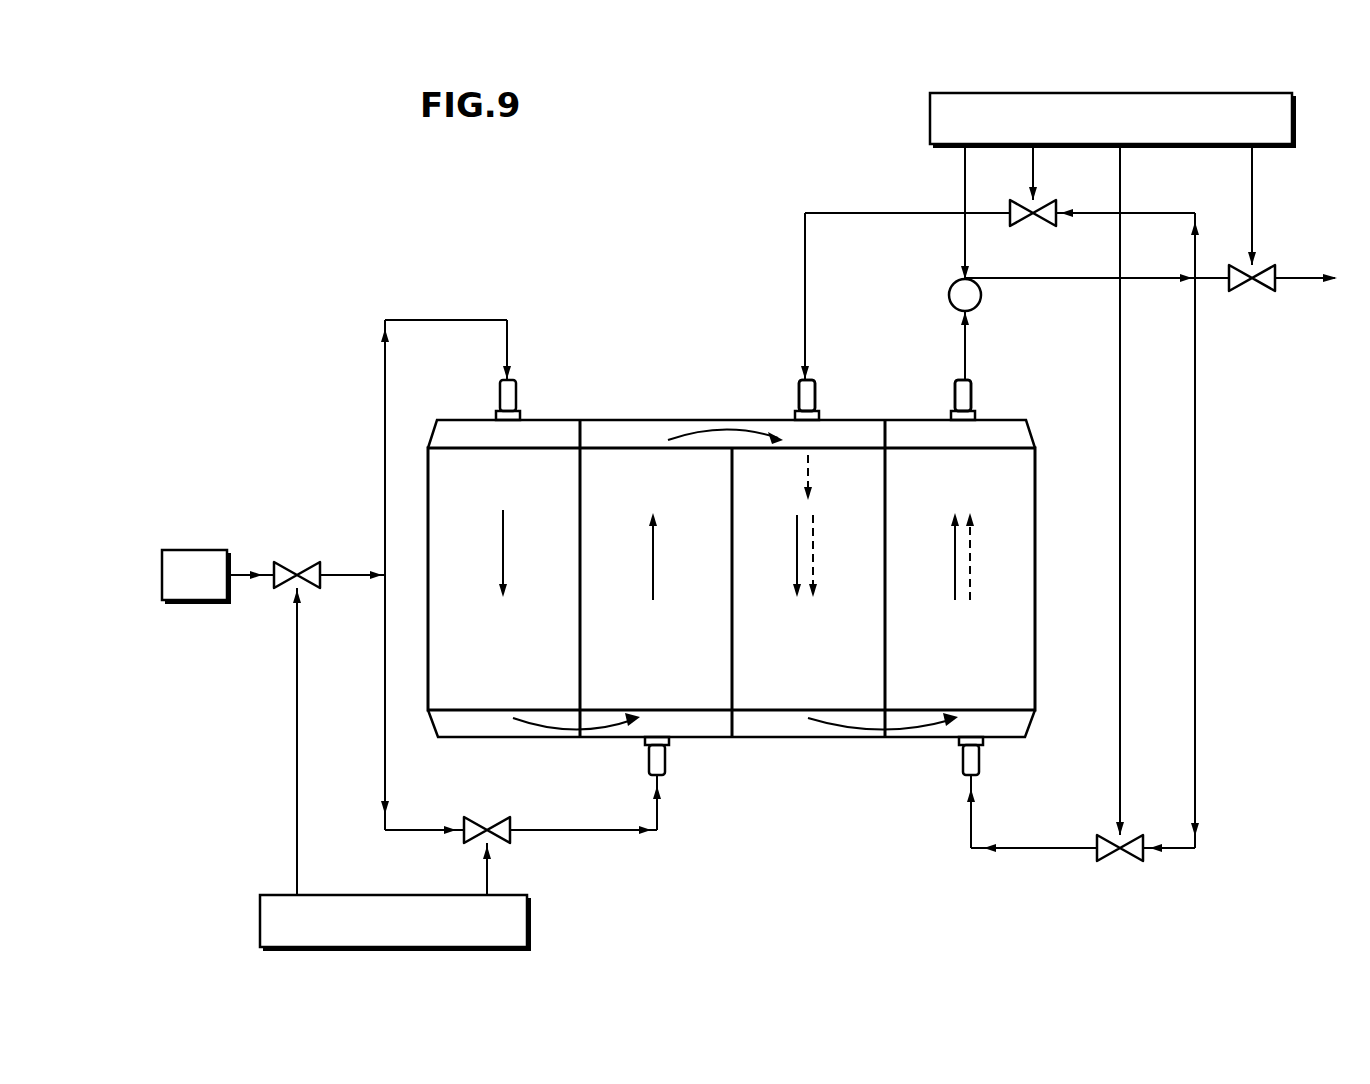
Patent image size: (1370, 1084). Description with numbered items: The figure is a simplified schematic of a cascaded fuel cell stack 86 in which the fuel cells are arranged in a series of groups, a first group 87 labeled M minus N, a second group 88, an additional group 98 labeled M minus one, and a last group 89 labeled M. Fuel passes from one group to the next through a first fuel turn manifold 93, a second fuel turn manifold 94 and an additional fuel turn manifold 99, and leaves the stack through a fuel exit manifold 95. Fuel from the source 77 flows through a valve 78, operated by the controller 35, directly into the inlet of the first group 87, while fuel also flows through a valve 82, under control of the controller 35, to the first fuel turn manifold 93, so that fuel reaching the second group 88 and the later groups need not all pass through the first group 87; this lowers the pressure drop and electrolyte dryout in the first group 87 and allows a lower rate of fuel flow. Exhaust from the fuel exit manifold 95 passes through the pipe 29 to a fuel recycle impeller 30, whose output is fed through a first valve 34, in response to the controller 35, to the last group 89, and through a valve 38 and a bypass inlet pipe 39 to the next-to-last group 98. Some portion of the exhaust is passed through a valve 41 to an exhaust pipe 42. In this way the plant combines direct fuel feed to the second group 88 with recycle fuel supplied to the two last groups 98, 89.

The pipe 29 is at (961, 401).
The fuel recycle impeller 30 is at (976, 290).
The first valve 34 is at (1124, 854).
The controller 35 is at (498, 893).
The valve 38 is at (1037, 222).
The bypass inlet pipe 39 is at (811, 401).
The valve 41 is at (1257, 286).
The exhaust pipe 42 is at (1301, 277).
The fuel source 77 is at (190, 549).
The valve 78 is at (299, 563).
The valve 82 is at (485, 821).
The cascaded fuel cell stack 86 is at (515, 256).
The first group 87 is at (523, 497).
The second group 88 is at (678, 497).
The third group 89 is at (975, 497).
The first fuel turn manifold 93 is at (480, 727).
The second fuel turn manifold 94 is at (768, 722).
The fuel exit manifold 95 is at (1012, 436).
The group 98 is at (788, 497).
The fuel turn manifold 99 is at (628, 432).